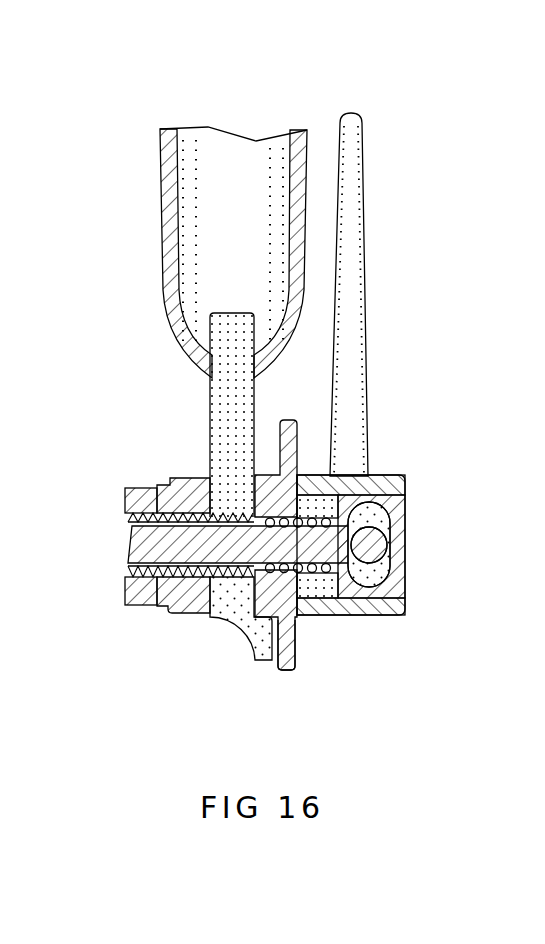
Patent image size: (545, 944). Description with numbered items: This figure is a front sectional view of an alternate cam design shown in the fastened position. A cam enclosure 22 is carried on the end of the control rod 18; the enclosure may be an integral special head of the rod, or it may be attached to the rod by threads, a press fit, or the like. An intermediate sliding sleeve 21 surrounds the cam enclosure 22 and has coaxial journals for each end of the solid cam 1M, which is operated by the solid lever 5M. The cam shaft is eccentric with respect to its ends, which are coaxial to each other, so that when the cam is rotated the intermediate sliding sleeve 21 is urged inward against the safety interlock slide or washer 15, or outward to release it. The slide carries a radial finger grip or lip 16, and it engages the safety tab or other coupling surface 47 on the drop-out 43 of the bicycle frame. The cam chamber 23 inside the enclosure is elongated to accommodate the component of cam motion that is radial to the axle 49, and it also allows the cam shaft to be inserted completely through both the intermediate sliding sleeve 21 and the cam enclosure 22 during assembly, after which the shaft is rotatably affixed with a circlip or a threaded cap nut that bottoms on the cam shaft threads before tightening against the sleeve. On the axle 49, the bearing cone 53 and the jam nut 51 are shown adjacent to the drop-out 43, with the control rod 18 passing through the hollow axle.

The solid cam 1M is at (397, 548).
The solid lever 5M is at (350, 300).
The safety interlock slide or washer 15 is at (300, 632).
The radial finger grip or lip on slide 16 is at (292, 666).
The control rod or skewer 18 is at (142, 548).
The intermediate sliding sleeve 21 is at (389, 478).
The cam enclosure 22 is at (398, 510).
The cam chamber 23 is at (397, 585).
The drop-out 43 is at (214, 424).
The safety tab or other coupling surface on drop-out 47 is at (265, 652).
The axle 49 is at (134, 522).
The jam nut 51 is at (190, 608).
The bearing cone 53 is at (142, 606).